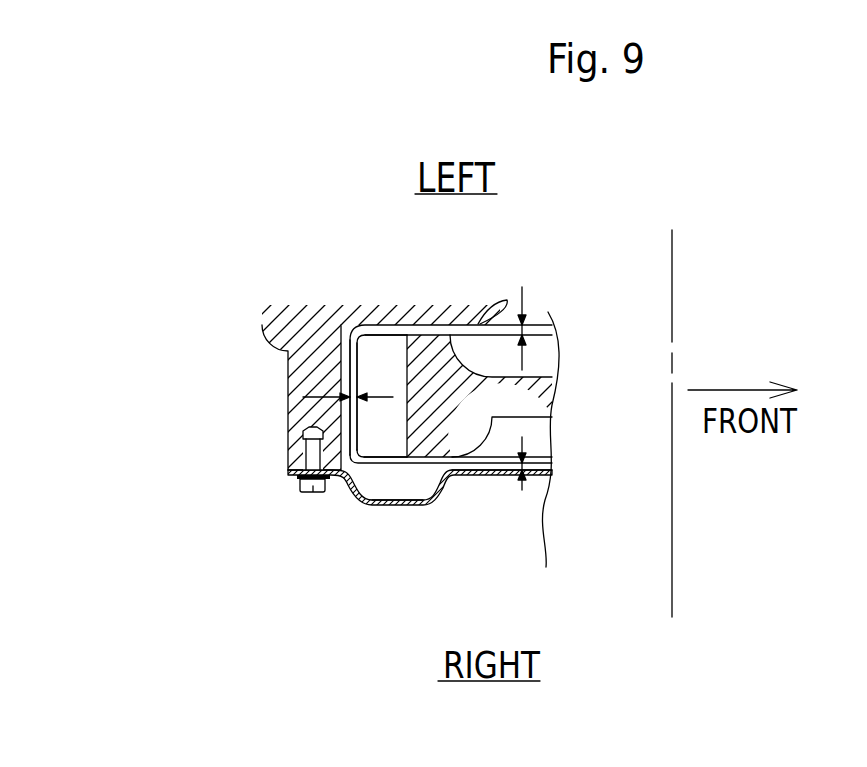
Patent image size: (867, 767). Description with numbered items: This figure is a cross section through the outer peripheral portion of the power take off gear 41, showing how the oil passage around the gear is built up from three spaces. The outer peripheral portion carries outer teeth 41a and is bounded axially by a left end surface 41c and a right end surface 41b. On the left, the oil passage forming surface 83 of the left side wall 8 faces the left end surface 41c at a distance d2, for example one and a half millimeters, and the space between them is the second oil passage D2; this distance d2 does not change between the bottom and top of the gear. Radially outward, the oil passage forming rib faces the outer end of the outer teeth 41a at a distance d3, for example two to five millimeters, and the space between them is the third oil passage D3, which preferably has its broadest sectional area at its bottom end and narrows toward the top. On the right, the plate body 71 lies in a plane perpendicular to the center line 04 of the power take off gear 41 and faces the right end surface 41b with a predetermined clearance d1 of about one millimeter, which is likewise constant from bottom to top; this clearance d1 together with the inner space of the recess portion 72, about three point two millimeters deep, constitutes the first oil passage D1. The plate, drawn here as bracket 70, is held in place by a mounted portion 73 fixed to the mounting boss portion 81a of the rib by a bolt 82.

The left side wall 8 is at (486, 310).
The oil passage forming surface 83 is at (380, 318).
The power take off gear 41 is at (553, 405).
The outer teeth 41a is at (292, 428).
The right end surface 41b is at (396, 463).
The left end surface 41c is at (393, 337).
The mounting boss portion 81a is at (365, 423).
The mounting bracket 70 is at (333, 504).
The plate body 71 is at (455, 476).
The recess portion 72 is at (388, 505).
The mounted portion 73 is at (298, 484).
The bolt 82 is at (313, 491).
The center line 04 is at (672, 523).
The first oil passage D1 is at (418, 464).
The second oil passage D2 is at (413, 329).
The third oil passage D3 is at (347, 372).
The clearance d1 is at (509, 482).
The distance d2 is at (539, 322).
The distance d3 is at (348, 380).